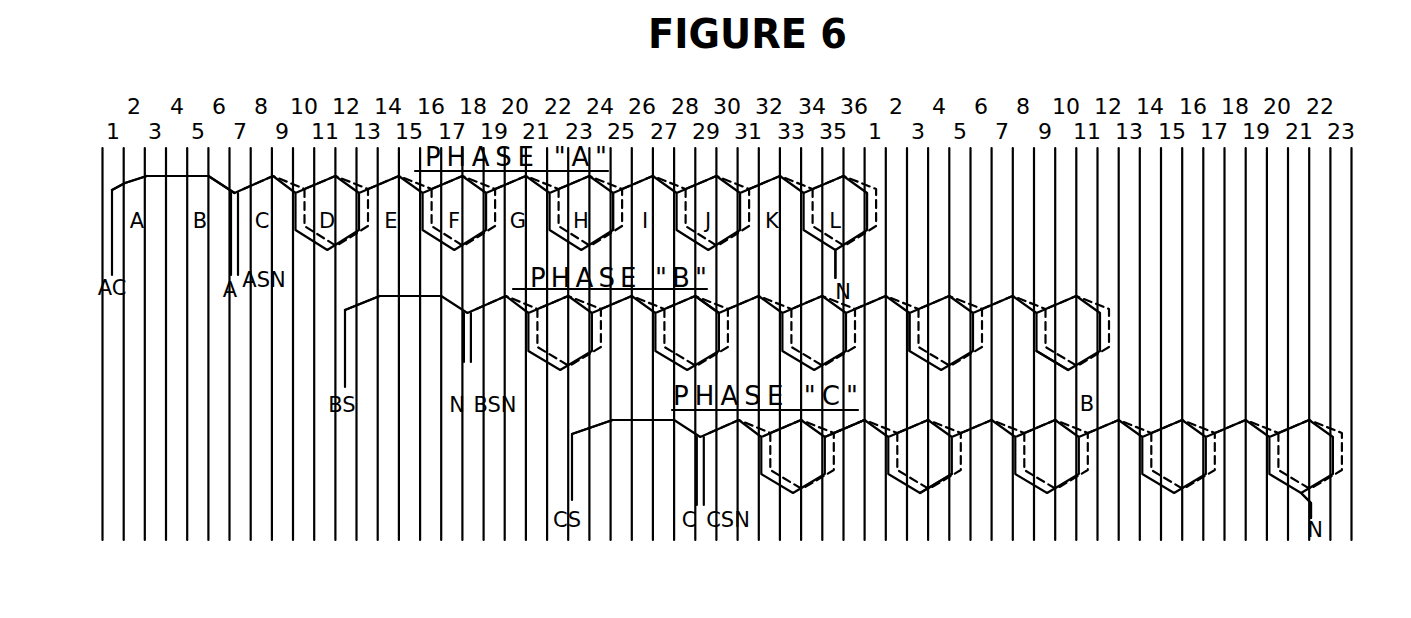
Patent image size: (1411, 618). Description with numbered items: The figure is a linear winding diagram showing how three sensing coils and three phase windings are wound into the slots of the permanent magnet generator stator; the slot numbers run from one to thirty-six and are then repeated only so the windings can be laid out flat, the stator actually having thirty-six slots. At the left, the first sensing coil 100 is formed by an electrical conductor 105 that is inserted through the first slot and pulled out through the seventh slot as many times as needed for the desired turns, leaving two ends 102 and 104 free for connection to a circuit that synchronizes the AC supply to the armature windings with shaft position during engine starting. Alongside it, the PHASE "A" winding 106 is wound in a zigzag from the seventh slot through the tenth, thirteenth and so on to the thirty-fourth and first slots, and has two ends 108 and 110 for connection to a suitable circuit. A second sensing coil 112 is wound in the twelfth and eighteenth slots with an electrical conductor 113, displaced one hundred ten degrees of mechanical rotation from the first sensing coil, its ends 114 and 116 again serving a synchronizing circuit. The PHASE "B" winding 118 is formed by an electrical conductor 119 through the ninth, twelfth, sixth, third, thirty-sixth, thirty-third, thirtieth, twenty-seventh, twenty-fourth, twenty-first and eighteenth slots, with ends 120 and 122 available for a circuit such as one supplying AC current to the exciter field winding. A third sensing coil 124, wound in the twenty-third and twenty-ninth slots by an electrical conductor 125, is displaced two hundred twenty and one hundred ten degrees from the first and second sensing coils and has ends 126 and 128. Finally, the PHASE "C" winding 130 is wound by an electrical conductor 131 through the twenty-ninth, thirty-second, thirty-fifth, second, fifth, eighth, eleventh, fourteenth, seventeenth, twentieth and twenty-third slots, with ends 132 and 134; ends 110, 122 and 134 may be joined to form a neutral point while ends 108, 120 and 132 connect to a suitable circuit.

The first sensing coil 100 is at (178, 175).
The end of electrical conductor 102 is at (112, 220).
The end of electrical conductor 104 is at (250, 205).
The electrical conductor 105 is at (125, 183).
The PHASE "A" winding 106 is at (613, 190).
The end of PHASE "A" winding 108 is at (229, 254).
The end of PHASE "A" winding 110 is at (840, 262).
The second sensing coil 112 is at (410, 297).
The electrical conductor 113 is at (373, 297).
The end of electrical conductor 114 is at (345, 362).
The end of electrical conductor 116 is at (490, 358).
The PHASE "B" winding 118 is at (718, 312).
The electrical conductor 119 is at (918, 313).
The end of PHASE "B" winding 120 is at (1050, 360).
The end of PHASE "B" winding 122 is at (490, 358).
The third sensing coil 124 is at (637, 420).
The electrical conductor 125 is at (588, 428).
The end of electrical conductor 126 is at (572, 477).
The end of electrical conductor 128 is at (715, 483).
The PHASE "C" winding 130 is at (930, 485).
The electrical conductor 131 is at (846, 430).
The end of PHASE "C" winding 132 is at (715, 483).
The end of PHASE "C" winding 134 is at (1297, 490).